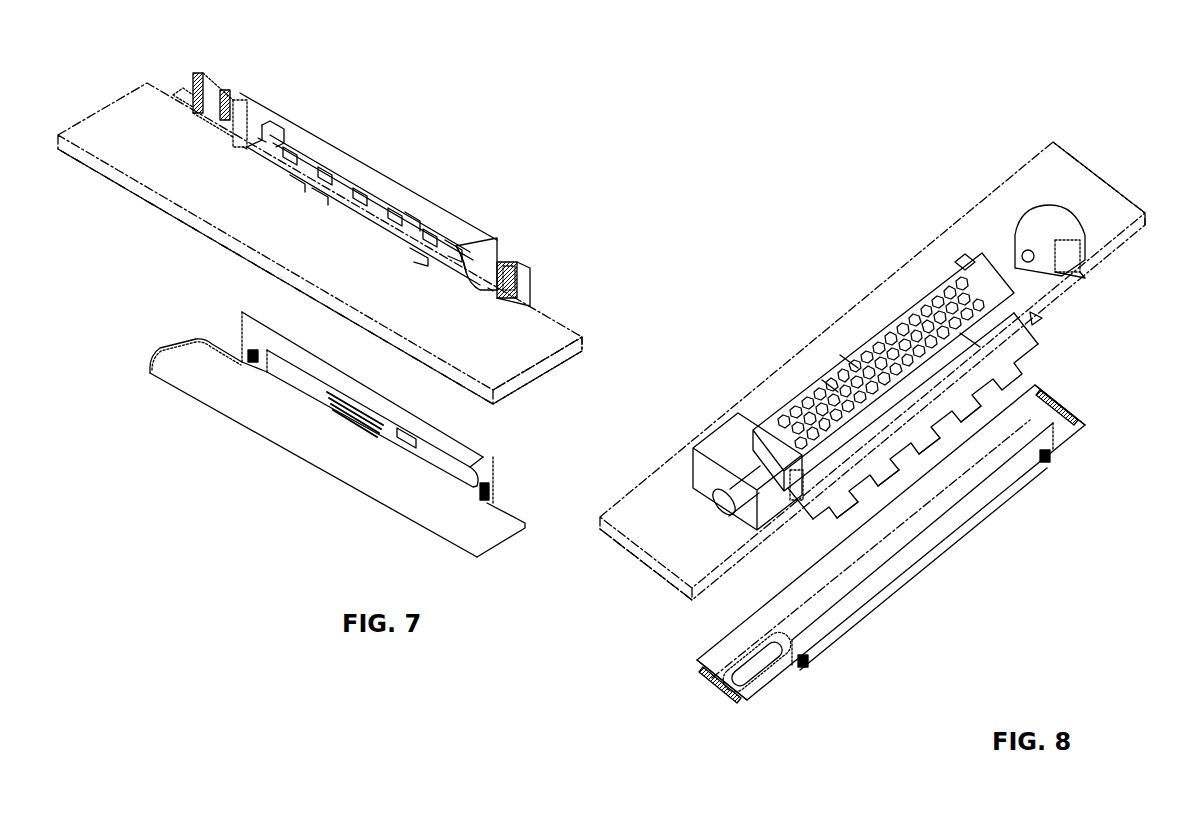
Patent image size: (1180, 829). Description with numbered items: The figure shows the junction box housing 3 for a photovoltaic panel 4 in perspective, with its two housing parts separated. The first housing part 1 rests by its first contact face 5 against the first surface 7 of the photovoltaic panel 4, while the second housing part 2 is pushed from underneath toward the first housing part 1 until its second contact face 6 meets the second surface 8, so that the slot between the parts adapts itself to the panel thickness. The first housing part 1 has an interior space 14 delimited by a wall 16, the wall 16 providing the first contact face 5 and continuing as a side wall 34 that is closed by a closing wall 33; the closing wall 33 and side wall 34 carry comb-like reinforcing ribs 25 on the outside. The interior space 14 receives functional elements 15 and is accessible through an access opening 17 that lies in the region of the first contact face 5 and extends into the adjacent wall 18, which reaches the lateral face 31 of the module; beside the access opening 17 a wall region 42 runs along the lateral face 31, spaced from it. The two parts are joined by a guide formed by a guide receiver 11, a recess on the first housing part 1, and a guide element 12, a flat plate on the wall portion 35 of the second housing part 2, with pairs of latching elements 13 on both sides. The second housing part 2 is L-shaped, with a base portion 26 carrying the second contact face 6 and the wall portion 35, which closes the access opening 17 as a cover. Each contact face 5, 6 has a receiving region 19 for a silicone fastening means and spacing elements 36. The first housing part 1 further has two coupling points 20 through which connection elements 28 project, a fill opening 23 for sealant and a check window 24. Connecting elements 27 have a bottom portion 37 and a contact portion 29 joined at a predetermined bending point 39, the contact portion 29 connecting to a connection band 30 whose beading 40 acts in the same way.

In FIG. 7, the first housing part 1 is at (407, 185).
In FIG. 8, the first housing part 1 is at (1057, 210).
In FIG. 7, the second housing part 2 is at (282, 422).
In FIG. 8, the second housing part 2 is at (1065, 448).
In FIG. 7, the junction box housing 3 is at (502, 240).
In FIG. 7, the photovoltaic panel 4 is at (562, 333).
In FIG. 8, the photovoltaic panel 4 is at (1110, 214).
In FIG. 7, the first contact face 5 is at (232, 125).
In FIG. 8, the first contact face 5 is at (1084, 273).
In FIG. 7, the second contact face 6 is at (170, 353).
In FIG. 8, the second contact face 6 is at (700, 665).
In FIG. 7, the first surface 7 is at (118, 100).
In FIG. 8, the first surface 7 is at (650, 512).
In FIG. 7, the second surface 8 is at (137, 177).
In FIG. 8, the second surface 8 is at (640, 560).
In FIG. 7, the guide receiver 11 is at (460, 253).
In FIG. 8, the guide receiver 11 is at (1045, 320).
In FIG. 7, the guide element 12 is at (485, 457).
In FIG. 8, the guide element 12 is at (1047, 448).
In FIG. 7, the latching elements 13 is at (262, 140).
In FIG. 8, the latching elements 13 is at (1047, 474).
In FIG. 7, the interior space 14 is at (279, 147).
In FIG. 8, the interior space 14 is at (853, 362).
In FIG. 7, the functional elements 15 is at (420, 223).
In FIG. 7, the wall 16 is at (368, 178).
In FIG. 8, the wall 16 is at (797, 483).
In FIG. 7, the access opening 17 is at (462, 255).
In FIG. 8, the access opening 17 is at (1010, 334).
In FIG. 7, the wall 18 is at (495, 262).
In FIG. 8, the wall 18 is at (970, 340).
In FIG. 8, the receiving region 19 is at (755, 678).
In FIG. 7, the coupling point 20 is at (193, 90).
In FIG. 8, the coupling point 20 is at (1063, 221).
In FIG. 8, the fill opening 23 is at (803, 490).
In FIG. 8, the check window 24 is at (1020, 243).
In FIG. 8, the reinforcing ribs 25 is at (887, 340).
In FIG. 7, the base portion 26 is at (393, 472).
In FIG. 8, the base portion 26 is at (763, 655).
In FIG. 7, the connecting elements 27 is at (298, 184).
In FIG. 8, the connecting elements 27 is at (867, 468).
In FIG. 7, the connection elements 28 is at (250, 128).
In FIG. 7, the contact portion 29 is at (320, 192).
In FIG. 8, the contact portion 29 is at (917, 427).
In FIG. 7, the connection band 30 is at (330, 175).
In FIG. 8, the connection band 30 is at (920, 432).
In FIG. 7, the lateral face 31 is at (535, 322).
In FIG. 8, the closing wall 33 is at (830, 387).
In FIG. 8, the side wall 34 is at (967, 260).
In FIG. 7, the wall portion 35 is at (442, 449).
In FIG. 8, the wall portion 35 is at (847, 628).
In FIG. 8, the spacing elements 36 is at (1067, 407).
In FIG. 7, the bottom portion 37 is at (323, 170).
In FIG. 8, the predetermined bending point 39 is at (847, 466).
In FIG. 7, the beading 40 is at (425, 257).
In FIG. 7, the wall region 42 is at (243, 148).